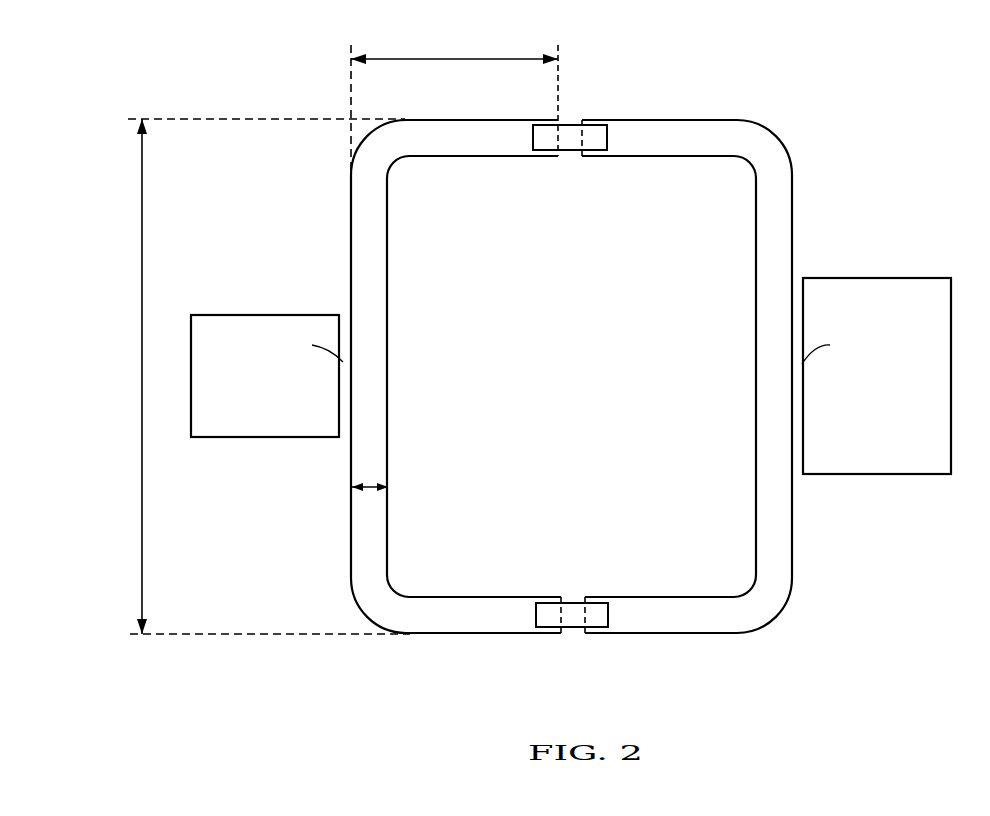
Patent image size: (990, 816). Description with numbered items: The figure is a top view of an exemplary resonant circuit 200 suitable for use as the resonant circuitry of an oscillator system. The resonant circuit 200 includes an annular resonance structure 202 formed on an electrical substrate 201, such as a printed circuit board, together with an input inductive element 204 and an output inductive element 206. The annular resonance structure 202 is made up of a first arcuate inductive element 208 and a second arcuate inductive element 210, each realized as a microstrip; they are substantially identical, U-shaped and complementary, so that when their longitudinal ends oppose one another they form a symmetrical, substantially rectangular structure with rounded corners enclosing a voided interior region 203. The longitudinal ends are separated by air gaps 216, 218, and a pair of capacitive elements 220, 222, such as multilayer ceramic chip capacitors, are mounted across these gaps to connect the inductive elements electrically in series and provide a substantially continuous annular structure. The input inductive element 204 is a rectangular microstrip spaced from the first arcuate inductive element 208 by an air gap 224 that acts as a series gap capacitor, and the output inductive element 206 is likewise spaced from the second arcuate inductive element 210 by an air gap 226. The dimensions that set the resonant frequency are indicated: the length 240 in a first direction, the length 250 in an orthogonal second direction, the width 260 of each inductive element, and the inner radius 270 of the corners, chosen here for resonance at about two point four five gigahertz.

The resonant circuit 200 is at (904, 60).
The electrical substrate 201 is at (407, 696).
The annular resonance structure 202 is at (722, 86).
The voided interior region 203 is at (736, 246).
The input inductive element 204 is at (904, 475).
The output inductive element 206 is at (226, 438).
The first arcuate inductive element 208 is at (778, 611).
The second arcuate inductive element 210 is at (370, 618).
The air gap 216 is at (566, 166).
The air gap 218 is at (569, 643).
The capacitive element 220 is at (607, 136).
The capacitive element 222 is at (608, 616).
The air gap 224 is at (828, 353).
The air gap 226 is at (315, 351).
The length in first direction 240 is at (142, 353).
The length in second direction 250 is at (443, 57).
The width 260 is at (372, 485).
The inner radius 270 is at (405, 173).